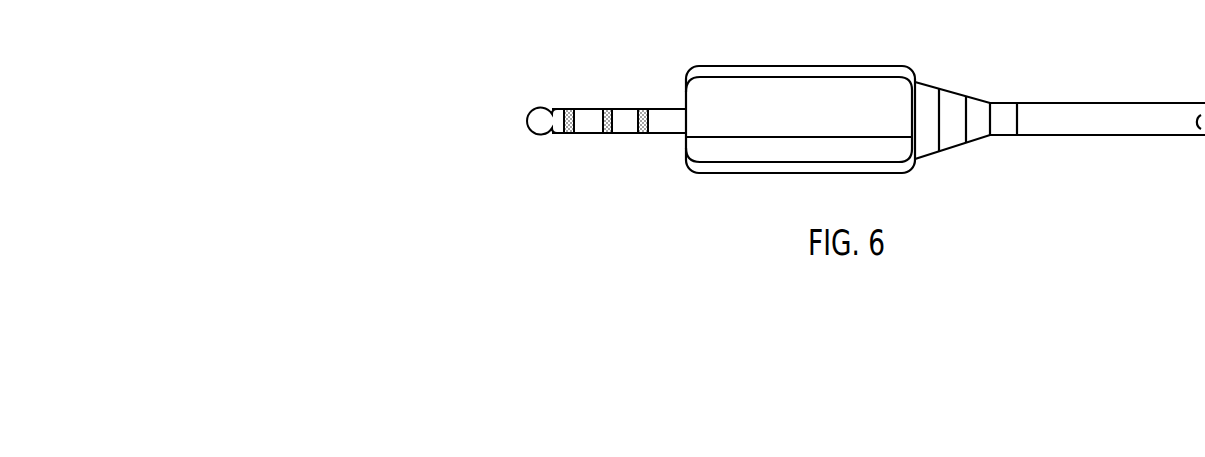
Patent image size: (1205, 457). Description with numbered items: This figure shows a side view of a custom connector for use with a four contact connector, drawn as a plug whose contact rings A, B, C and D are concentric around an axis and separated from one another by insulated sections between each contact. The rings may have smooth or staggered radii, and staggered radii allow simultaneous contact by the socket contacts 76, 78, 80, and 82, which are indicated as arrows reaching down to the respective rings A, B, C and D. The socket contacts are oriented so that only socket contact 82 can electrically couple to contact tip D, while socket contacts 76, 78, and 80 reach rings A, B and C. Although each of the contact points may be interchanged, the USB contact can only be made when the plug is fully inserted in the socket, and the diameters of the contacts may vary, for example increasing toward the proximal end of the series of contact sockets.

The socket contact 76 is at (675, 82).
The socket contact 78 is at (632, 82).
The socket contact 80 is at (595, 82).
The socket contact 82 is at (560, 83).